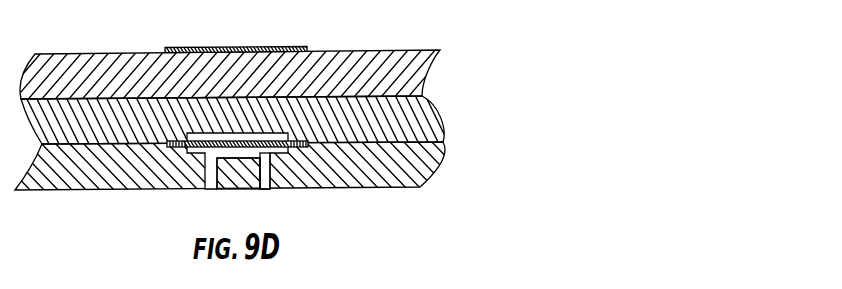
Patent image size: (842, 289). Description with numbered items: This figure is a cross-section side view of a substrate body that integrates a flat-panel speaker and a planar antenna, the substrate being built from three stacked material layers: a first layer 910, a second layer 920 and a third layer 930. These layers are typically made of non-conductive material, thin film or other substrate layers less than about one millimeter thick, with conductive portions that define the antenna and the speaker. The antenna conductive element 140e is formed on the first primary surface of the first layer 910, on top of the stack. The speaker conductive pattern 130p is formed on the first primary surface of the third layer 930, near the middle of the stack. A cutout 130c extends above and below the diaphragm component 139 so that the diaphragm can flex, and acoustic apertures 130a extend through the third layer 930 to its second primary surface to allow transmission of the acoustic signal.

The first layer 910 is at (385, 67).
The second layer 920 is at (405, 120).
The third layer 930 is at (405, 173).
The antenna conductive element 140e is at (257, 47).
The cutout 130c is at (200, 133).
The acoustic apertures 130a is at (263, 184).
The diaphragm component 139 is at (248, 141).
The speaker conductive pattern 130p is at (196, 148).